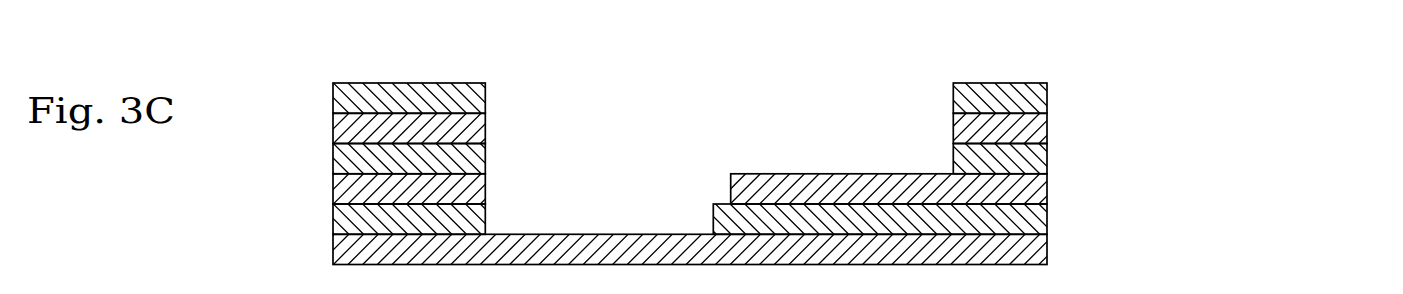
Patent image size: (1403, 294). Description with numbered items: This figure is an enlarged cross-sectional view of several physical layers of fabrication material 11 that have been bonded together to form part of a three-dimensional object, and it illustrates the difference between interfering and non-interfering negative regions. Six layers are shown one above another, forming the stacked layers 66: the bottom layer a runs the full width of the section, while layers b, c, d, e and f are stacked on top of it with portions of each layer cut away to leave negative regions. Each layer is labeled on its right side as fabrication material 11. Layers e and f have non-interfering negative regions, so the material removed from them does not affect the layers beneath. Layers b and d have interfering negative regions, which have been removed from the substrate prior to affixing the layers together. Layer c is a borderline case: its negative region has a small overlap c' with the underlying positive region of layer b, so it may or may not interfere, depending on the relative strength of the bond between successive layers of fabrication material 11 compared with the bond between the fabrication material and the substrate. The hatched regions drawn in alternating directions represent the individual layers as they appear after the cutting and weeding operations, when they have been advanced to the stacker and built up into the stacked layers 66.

The fabrication material 11 is at (698, 173).
The stacked layers 66 is at (1240, 172).
The layer a is at (686, 249).
The layer b is at (693, 219).
The layer c is at (686, 189).
The small overlap c' is at (686, 173).
The layer d is at (693, 159).
The layer e is at (686, 128).
The layer f is at (693, 98).